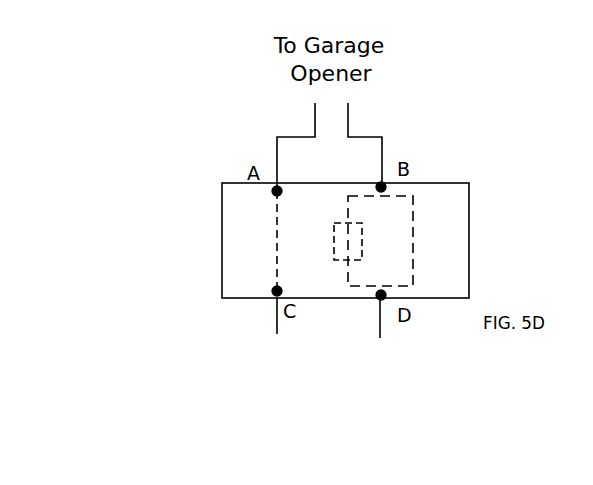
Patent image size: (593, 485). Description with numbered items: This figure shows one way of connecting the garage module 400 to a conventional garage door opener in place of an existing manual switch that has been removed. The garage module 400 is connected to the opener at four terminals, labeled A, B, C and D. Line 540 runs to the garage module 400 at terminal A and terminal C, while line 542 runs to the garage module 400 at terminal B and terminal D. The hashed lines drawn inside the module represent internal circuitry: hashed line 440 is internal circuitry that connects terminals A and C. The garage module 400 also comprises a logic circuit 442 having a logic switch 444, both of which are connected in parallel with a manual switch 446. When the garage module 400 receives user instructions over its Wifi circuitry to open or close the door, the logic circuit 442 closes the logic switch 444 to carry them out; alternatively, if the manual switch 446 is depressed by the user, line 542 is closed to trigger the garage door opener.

The garage module 400 is at (450, 182).
The hashed line 440 is at (275, 213).
The logic circuit 442 is at (335, 239).
The logic switch 444 is at (352, 243).
The manual switch 446 is at (421, 240).
The line 540 is at (315, 115).
The line 542 is at (352, 117).